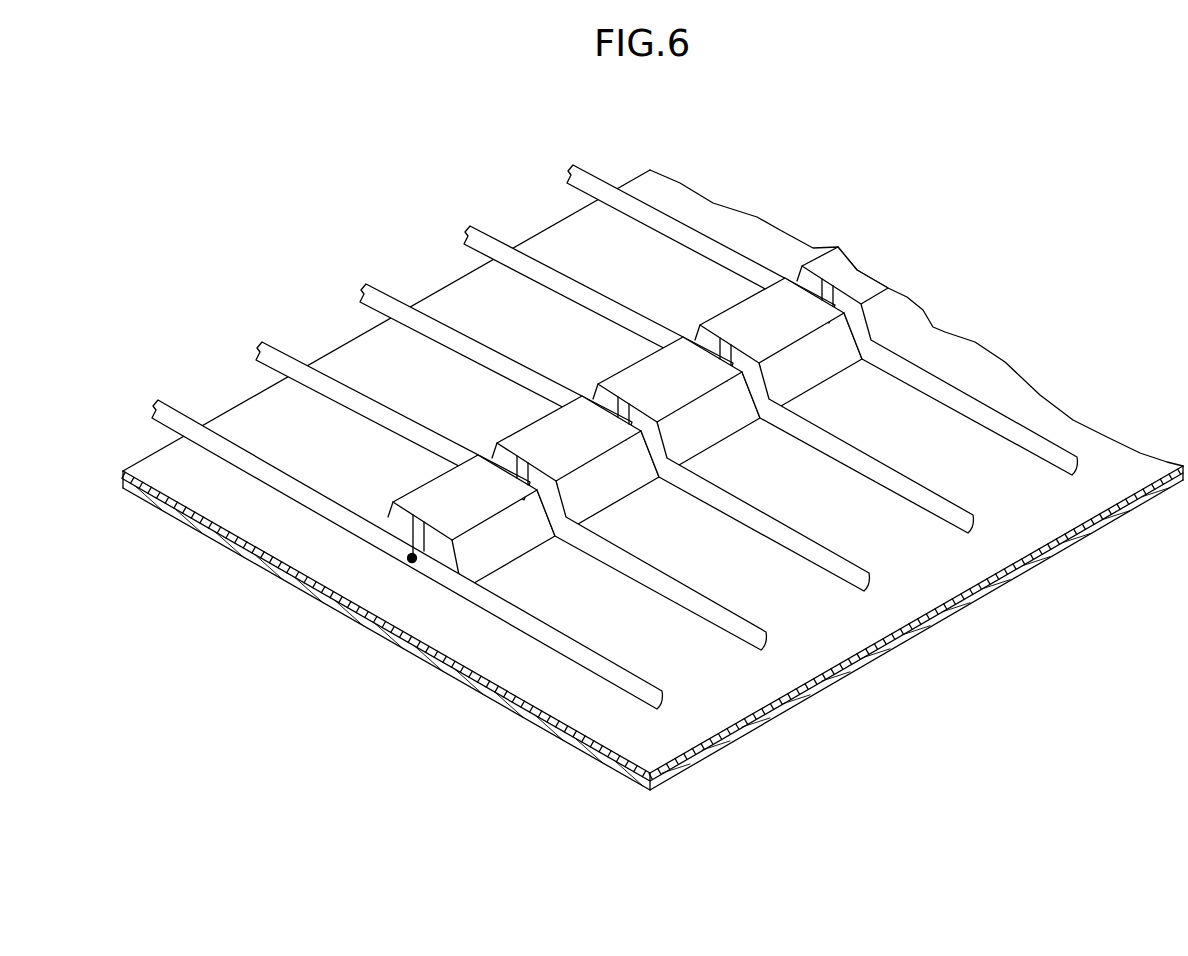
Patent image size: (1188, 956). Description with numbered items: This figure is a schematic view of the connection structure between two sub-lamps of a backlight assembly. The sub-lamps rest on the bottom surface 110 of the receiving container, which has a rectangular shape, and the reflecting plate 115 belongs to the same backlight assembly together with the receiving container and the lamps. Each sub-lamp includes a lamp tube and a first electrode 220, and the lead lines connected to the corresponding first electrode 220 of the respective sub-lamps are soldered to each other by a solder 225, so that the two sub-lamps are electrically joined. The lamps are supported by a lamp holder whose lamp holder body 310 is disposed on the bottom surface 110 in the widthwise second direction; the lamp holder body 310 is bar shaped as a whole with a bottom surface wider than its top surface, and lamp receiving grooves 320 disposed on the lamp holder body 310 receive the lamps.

The bottom surface 110 is at (717, 756).
The reflecting plate 115 is at (625, 777).
The first electrode 220 is at (393, 558).
The solder 225 is at (397, 563).
The lamp holder body 310 is at (522, 552).
The lamp receiving groove 320 is at (495, 458).